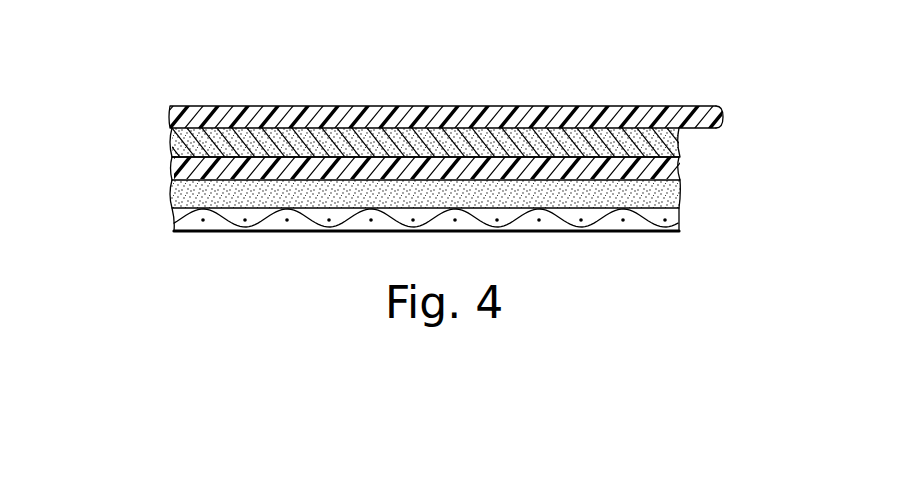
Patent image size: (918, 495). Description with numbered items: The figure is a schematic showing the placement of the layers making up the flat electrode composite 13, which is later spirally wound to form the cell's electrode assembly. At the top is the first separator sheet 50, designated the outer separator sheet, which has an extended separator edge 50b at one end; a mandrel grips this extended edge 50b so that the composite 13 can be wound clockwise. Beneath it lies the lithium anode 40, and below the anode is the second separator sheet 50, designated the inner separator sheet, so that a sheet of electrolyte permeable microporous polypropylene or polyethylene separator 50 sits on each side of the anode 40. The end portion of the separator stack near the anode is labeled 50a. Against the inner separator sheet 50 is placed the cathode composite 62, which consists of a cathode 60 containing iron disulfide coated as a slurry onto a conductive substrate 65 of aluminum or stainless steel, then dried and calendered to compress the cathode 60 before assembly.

The flat electrode composite 13 is at (231, 76).
The separator sheet 50 is at (664, 119).
The first hatched layer portion 50a is at (173, 169).
The extended separator edge 50b is at (727, 116).
The anode 40 is at (678, 141).
The cathode composite 62 is at (164, 178).
The cathode 60 is at (677, 200).
The conductive substrate sheet 65 is at (600, 227).